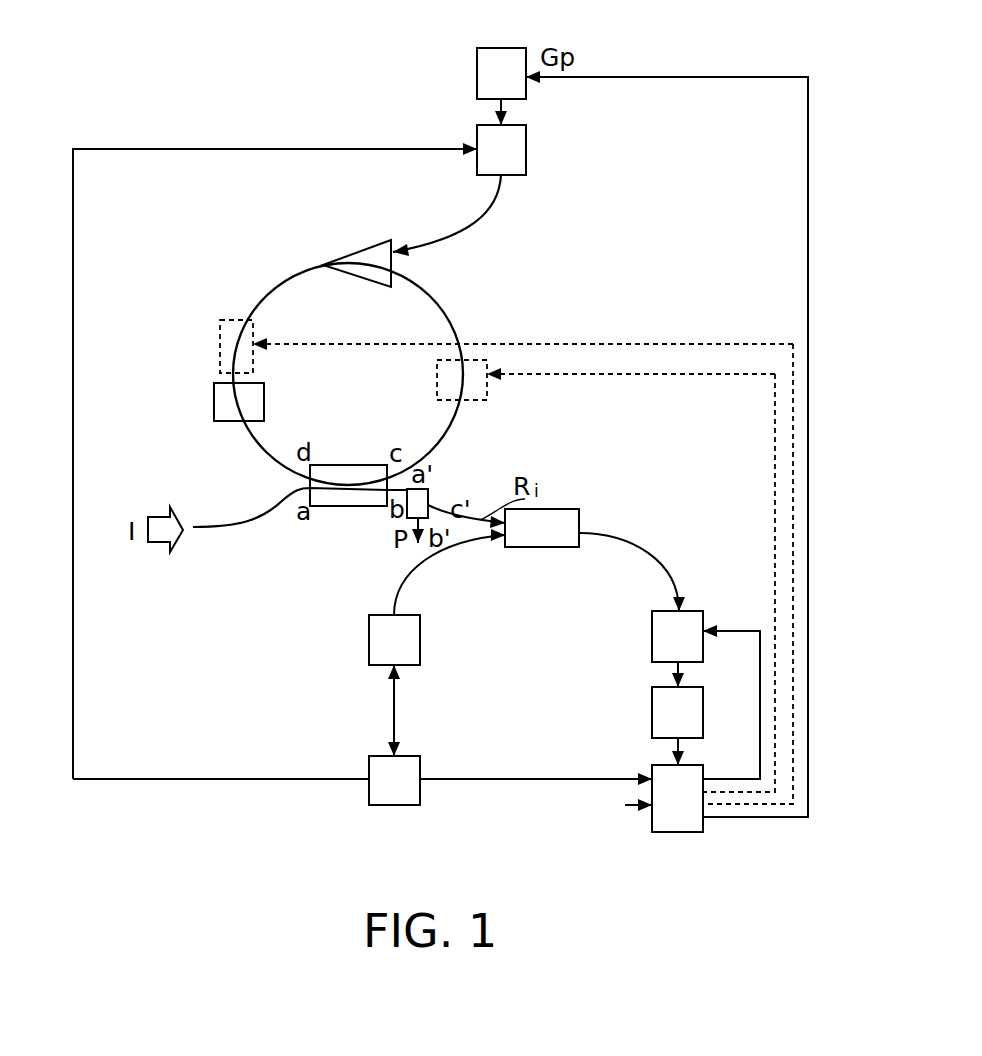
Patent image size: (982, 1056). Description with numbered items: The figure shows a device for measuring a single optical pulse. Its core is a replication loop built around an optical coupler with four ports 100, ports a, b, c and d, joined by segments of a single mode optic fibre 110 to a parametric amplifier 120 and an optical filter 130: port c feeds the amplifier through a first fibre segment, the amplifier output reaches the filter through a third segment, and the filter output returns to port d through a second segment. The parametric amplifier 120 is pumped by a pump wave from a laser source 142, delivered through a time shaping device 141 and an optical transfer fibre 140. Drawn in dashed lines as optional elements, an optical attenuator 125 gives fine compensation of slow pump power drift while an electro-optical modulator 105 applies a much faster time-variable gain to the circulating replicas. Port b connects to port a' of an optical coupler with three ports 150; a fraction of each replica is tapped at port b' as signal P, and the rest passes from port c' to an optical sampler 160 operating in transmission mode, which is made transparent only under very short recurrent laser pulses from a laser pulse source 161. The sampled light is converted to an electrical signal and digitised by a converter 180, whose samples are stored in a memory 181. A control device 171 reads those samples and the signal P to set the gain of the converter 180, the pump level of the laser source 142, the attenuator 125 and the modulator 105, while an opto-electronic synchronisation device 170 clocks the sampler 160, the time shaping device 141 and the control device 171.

The optical coupler with four ports 100 is at (348, 478).
The electro-optical modulator 105 is at (486, 398).
The single mode optic fibre 110 is at (270, 292).
The parametric amplifier 120 is at (360, 256).
The optical attenuator 125 is at (220, 345).
The optical filter 130 is at (226, 404).
The optical transfer fibre 140 is at (494, 218).
The time shaping device 141 is at (518, 140).
The laser source 142 is at (497, 60).
The optical coupler with three ports 150 is at (422, 496).
The optical sampler 160 is at (542, 542).
The laser pulse source 161 is at (412, 637).
The opto-electronic synchronisation device 170 is at (391, 798).
The control device 171 is at (676, 824).
The converter 180 is at (665, 638).
The memory 181 is at (665, 717).